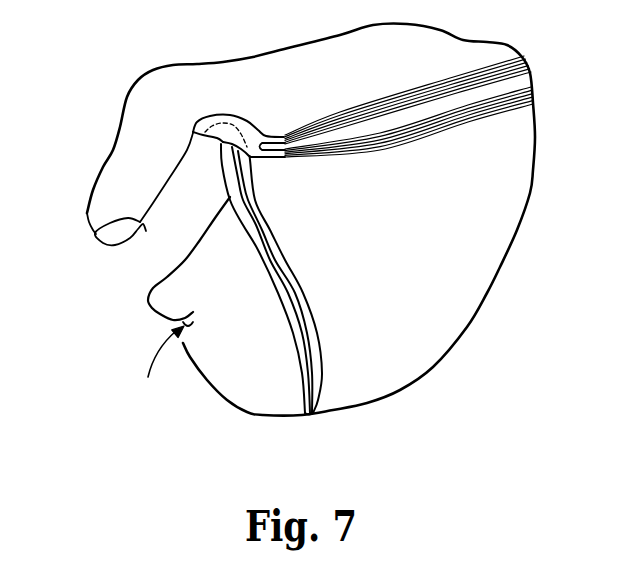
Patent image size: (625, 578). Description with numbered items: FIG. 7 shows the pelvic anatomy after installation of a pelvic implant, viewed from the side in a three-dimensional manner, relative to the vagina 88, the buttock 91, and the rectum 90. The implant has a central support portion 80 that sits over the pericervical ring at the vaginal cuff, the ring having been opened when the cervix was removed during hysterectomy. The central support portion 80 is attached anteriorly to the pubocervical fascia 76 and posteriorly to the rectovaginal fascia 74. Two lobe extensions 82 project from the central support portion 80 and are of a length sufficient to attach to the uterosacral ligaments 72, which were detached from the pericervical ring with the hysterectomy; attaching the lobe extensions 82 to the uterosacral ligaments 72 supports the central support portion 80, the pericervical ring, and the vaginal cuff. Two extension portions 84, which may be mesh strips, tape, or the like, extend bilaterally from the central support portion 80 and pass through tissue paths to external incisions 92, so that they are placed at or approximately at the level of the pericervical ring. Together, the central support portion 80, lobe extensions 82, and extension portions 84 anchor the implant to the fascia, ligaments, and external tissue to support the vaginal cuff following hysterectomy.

The uterosacral ligaments 72 is at (380, 106).
The rectovaginal fascia 74 is at (266, 212).
The pubocervical fascia 76 is at (192, 134).
The central support portion 80 is at (196, 128).
The lobe extensions 82 is at (270, 133).
The extension portions 84 is at (292, 334).
The vagina 88 is at (95, 234).
The rectum 90 is at (160, 365).
The buttock 91 is at (497, 265).
The external incisions 92 is at (304, 415).